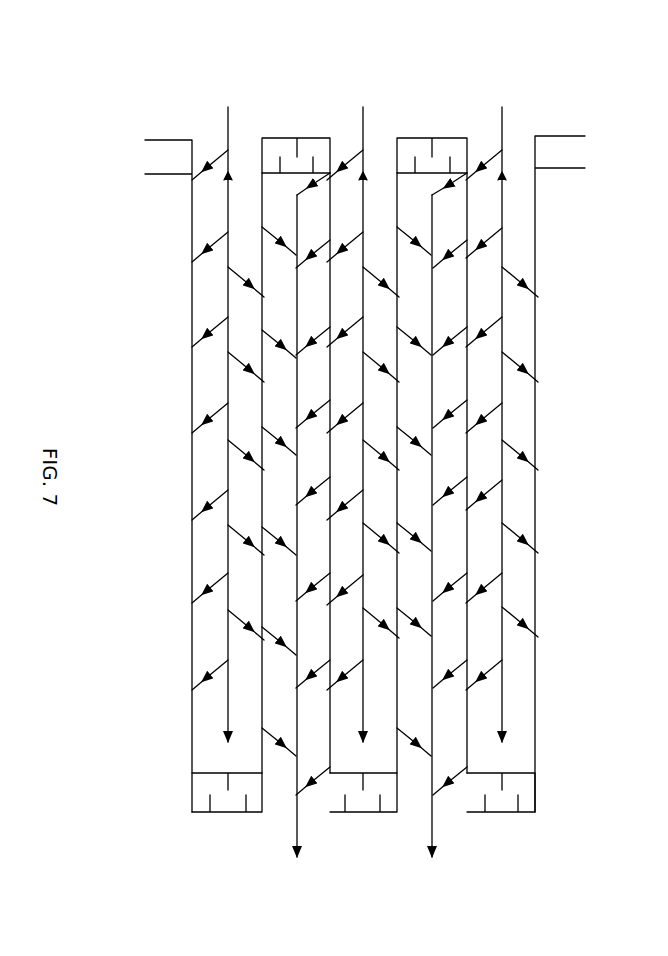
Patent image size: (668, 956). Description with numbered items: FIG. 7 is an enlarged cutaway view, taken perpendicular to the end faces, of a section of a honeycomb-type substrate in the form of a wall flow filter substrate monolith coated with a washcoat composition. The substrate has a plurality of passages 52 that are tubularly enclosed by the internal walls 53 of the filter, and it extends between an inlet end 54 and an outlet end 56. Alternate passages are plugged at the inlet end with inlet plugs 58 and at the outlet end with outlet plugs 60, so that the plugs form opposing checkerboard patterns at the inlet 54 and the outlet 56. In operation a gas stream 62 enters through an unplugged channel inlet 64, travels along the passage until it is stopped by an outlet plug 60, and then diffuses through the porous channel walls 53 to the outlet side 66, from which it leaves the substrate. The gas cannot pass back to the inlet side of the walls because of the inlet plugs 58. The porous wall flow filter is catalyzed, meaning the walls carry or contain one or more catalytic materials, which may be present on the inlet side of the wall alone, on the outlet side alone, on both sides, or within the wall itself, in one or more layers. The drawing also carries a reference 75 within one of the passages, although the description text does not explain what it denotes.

The passages 52 is at (230, 174).
The internal walls 53 is at (392, 437).
The inlet end 54 is at (578, 114).
The outlet end 56 is at (536, 818).
The inlet plugs 58 is at (148, 140).
The outlet plugs 60 is at (228, 812).
The gas stream 62 is at (228, 297).
The channel inlet 64 is at (379, 497).
The outlet side 66 is at (364, 518).
The flow channel 75 is at (240, 444).